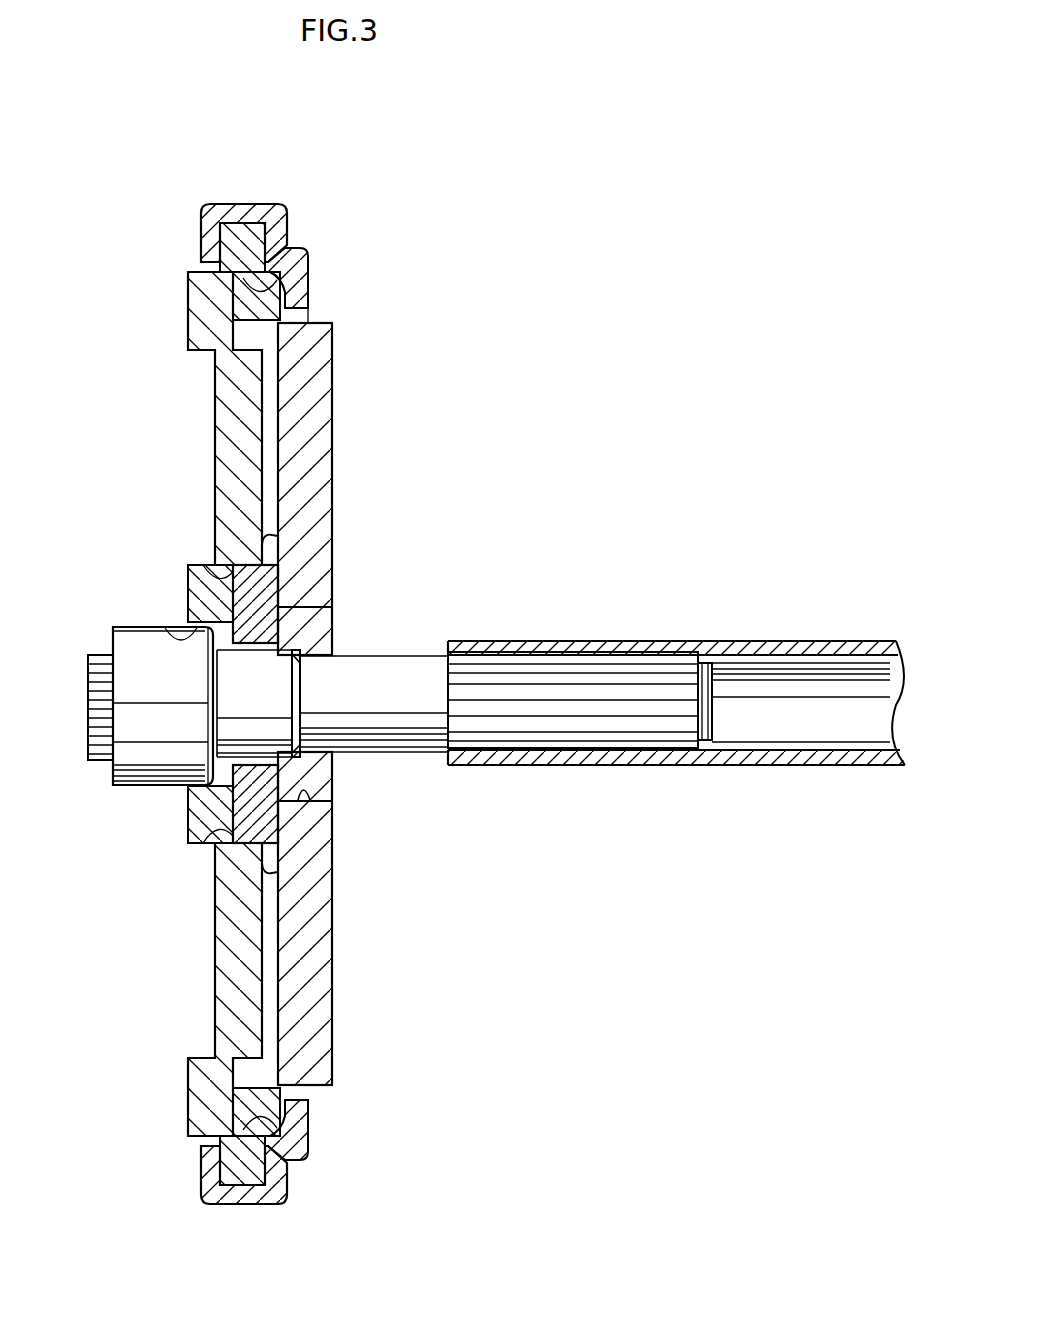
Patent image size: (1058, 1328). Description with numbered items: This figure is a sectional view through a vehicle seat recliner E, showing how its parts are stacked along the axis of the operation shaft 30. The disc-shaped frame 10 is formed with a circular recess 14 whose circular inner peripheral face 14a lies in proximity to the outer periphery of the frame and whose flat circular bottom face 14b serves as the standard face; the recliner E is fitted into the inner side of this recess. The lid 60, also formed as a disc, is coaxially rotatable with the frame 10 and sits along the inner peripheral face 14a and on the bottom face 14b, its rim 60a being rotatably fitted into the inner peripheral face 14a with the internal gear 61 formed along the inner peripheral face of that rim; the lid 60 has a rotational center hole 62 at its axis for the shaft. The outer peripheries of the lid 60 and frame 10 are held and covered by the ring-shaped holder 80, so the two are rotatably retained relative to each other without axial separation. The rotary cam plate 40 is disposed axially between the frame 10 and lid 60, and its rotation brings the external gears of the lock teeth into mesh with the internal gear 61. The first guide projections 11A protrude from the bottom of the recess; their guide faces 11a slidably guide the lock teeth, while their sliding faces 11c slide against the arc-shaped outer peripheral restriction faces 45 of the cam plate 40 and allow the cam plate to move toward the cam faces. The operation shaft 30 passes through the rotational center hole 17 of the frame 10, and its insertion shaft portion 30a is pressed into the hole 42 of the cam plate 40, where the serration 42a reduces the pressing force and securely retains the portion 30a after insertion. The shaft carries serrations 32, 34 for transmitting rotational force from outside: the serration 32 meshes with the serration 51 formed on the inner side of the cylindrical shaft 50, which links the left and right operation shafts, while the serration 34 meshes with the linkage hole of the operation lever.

The recliner E is at (296, 192).
The frame 10 is at (180, 320).
The guide faces 11a is at (270, 922).
The first guide projections 11A is at (262, 441).
The sliding faces 11c is at (230, 577).
The circular recess 14 is at (272, 398).
The inner peripheral face 14a is at (257, 282).
The bottom face 14b is at (278, 297).
The rotational center hole 17 is at (170, 638).
The operation shaft 30 is at (408, 648).
The insertion shaft portion 30a is at (294, 765).
The serration 32 is at (637, 678).
The serration 34 is at (97, 654).
The rotary cam plate 40 is at (288, 588).
The hole 42 is at (293, 607).
The serration 42a is at (242, 758).
The outer peripheral restriction faces 45 is at (268, 536).
The cylindrical shaft 50 is at (787, 633).
The serration 51 is at (716, 663).
The lid 60 is at (342, 343).
The rim 60a is at (305, 302).
The internal gear 61 is at (320, 326).
The rotational center hole 62 is at (308, 800).
The ring-shaped holder 80 is at (200, 226).